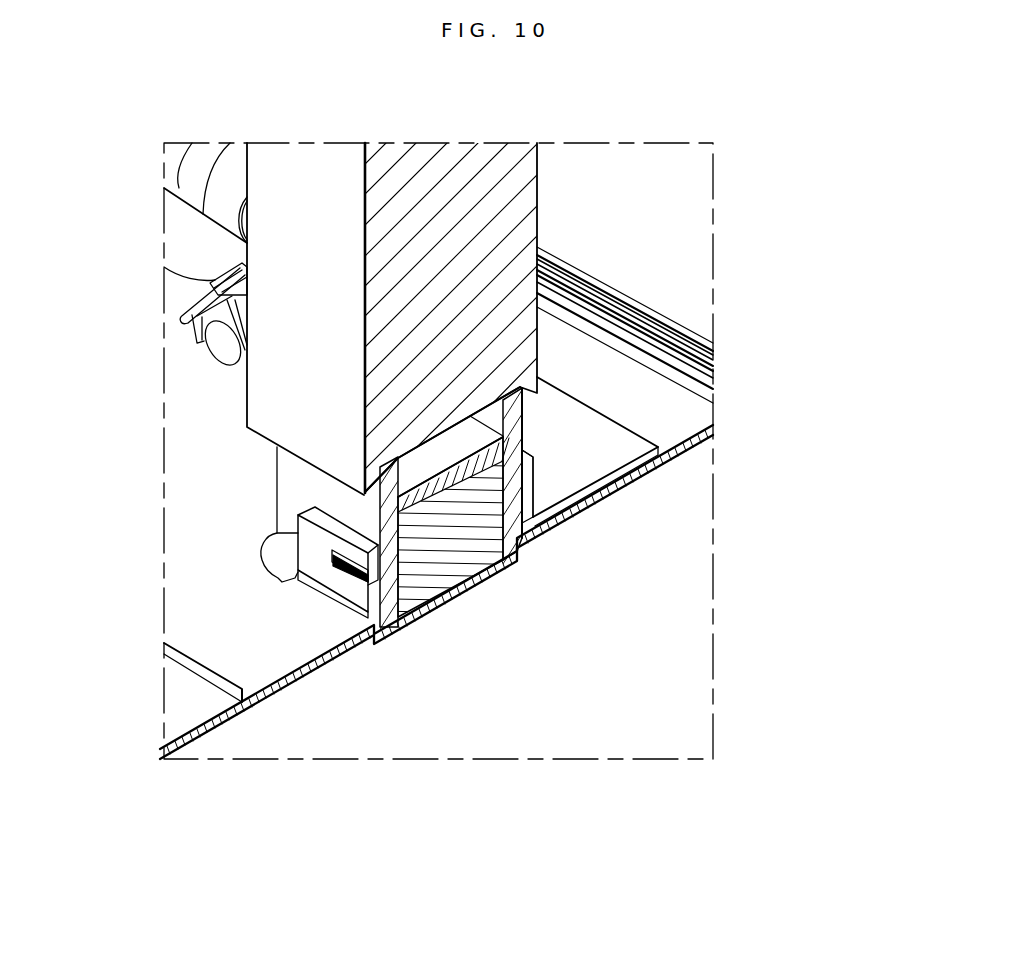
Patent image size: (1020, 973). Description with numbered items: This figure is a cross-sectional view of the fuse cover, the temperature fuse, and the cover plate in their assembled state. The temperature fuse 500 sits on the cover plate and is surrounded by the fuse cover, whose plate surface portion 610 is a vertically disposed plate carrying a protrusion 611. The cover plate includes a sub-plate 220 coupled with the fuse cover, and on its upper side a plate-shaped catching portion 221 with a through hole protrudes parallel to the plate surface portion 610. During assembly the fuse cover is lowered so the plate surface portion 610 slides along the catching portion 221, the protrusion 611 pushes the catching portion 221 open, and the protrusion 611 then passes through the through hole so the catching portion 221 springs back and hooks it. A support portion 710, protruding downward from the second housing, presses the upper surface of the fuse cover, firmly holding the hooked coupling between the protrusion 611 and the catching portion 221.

The support portion 710 is at (498, 197).
The plate surface portion 610 is at (527, 424).
The protrusion 611 is at (340, 568).
The temperature fuse 500 is at (463, 560).
The catching portion 221 is at (313, 542).
The sub-plate 220 is at (253, 662).